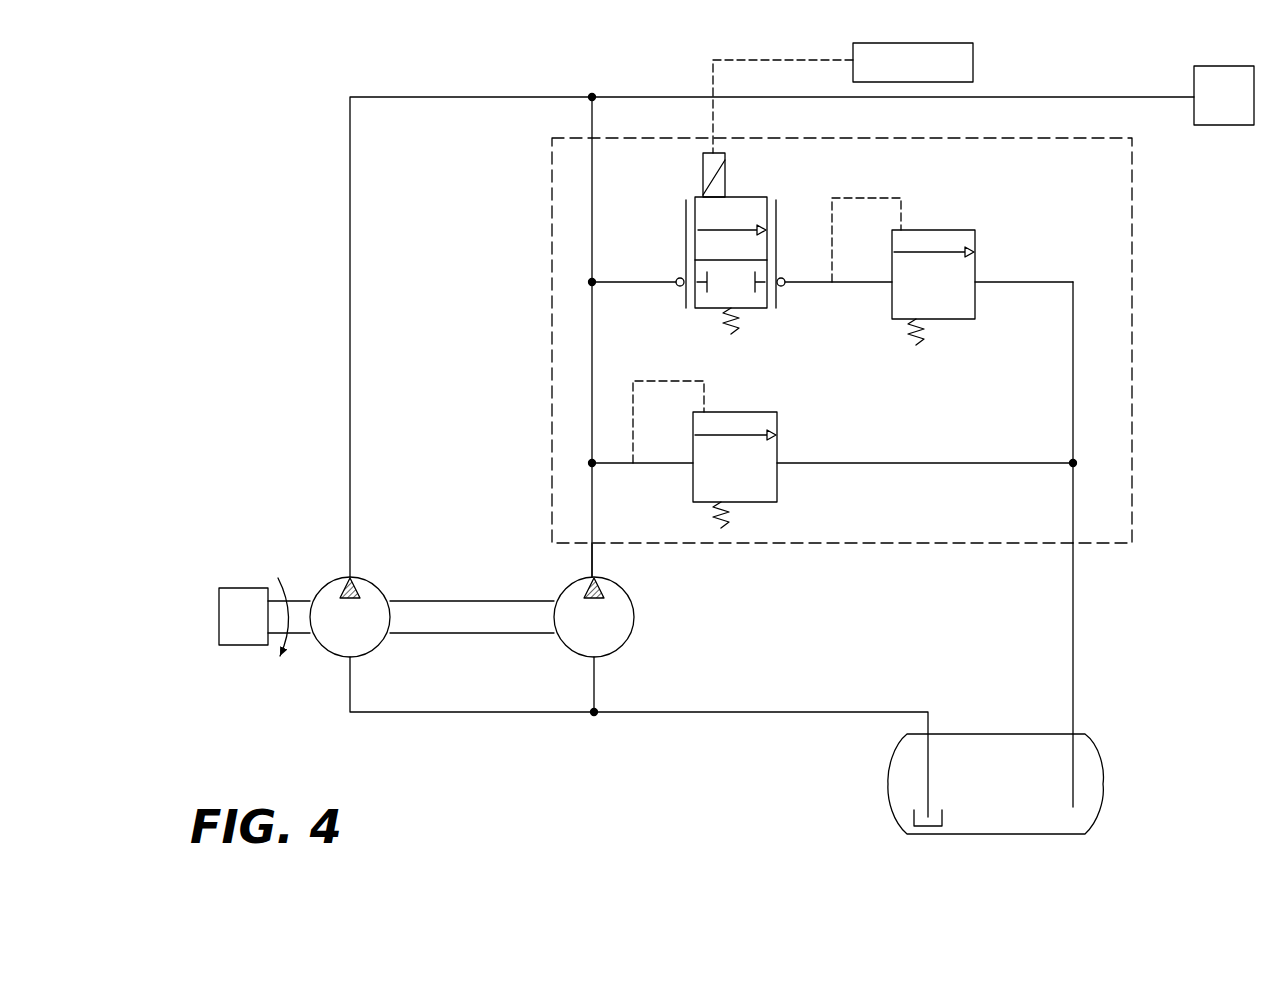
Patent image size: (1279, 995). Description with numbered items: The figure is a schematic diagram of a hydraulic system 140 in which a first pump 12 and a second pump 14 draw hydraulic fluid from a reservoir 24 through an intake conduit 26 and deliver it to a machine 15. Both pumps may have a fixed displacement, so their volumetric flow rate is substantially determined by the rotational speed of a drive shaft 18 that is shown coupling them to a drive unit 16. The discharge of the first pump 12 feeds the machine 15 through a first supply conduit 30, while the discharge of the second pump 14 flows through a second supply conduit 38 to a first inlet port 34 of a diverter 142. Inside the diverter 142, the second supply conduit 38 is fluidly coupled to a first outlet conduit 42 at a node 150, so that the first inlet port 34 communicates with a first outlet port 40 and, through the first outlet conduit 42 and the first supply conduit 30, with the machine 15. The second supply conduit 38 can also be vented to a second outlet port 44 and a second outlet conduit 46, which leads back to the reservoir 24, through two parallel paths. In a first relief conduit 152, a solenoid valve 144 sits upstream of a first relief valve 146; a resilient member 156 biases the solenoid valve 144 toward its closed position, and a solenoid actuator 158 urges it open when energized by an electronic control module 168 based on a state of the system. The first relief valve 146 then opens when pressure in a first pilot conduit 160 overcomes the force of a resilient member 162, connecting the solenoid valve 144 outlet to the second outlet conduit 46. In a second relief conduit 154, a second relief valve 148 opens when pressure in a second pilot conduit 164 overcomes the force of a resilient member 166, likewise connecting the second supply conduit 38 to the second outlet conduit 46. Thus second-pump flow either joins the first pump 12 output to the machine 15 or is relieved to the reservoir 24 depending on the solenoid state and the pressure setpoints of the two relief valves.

The first pump 12 is at (370, 580).
The second pump 14 is at (630, 636).
The machine 15 is at (1224, 95).
The motor 16 is at (264, 617).
The drive shaft 18 is at (430, 600).
The reservoir 24 is at (1103, 771).
The intake conduit 26 is at (767, 714).
The first supply conduit 30 is at (350, 362).
The first inlet port 34 is at (590, 545).
The second supply conduit 38 is at (592, 378).
The first outlet port 40 is at (592, 137).
The first outlet conduit 42 is at (592, 192).
The second outlet port 44 is at (1073, 545).
The second outlet conduit 46 is at (1075, 692).
The hydraulic system 140 is at (643, 772).
The diverter 142 is at (1135, 290).
The solenoid valve 144 is at (742, 197).
The first relief valve 146 is at (976, 302).
The second relief valve 148 is at (779, 491).
The node 150 is at (592, 282).
The first relief conduit 152 is at (1020, 282).
The second relief conduit 154 is at (845, 462).
The resilient member 156 is at (738, 332).
The solenoid actuator 158 is at (703, 168).
The first pilot conduit 160 is at (878, 198).
The resilient member 162 is at (922, 342).
The second pilot conduit 164 is at (657, 381).
The resilient member 166 is at (728, 526).
The electronic control module 168 is at (975, 72).